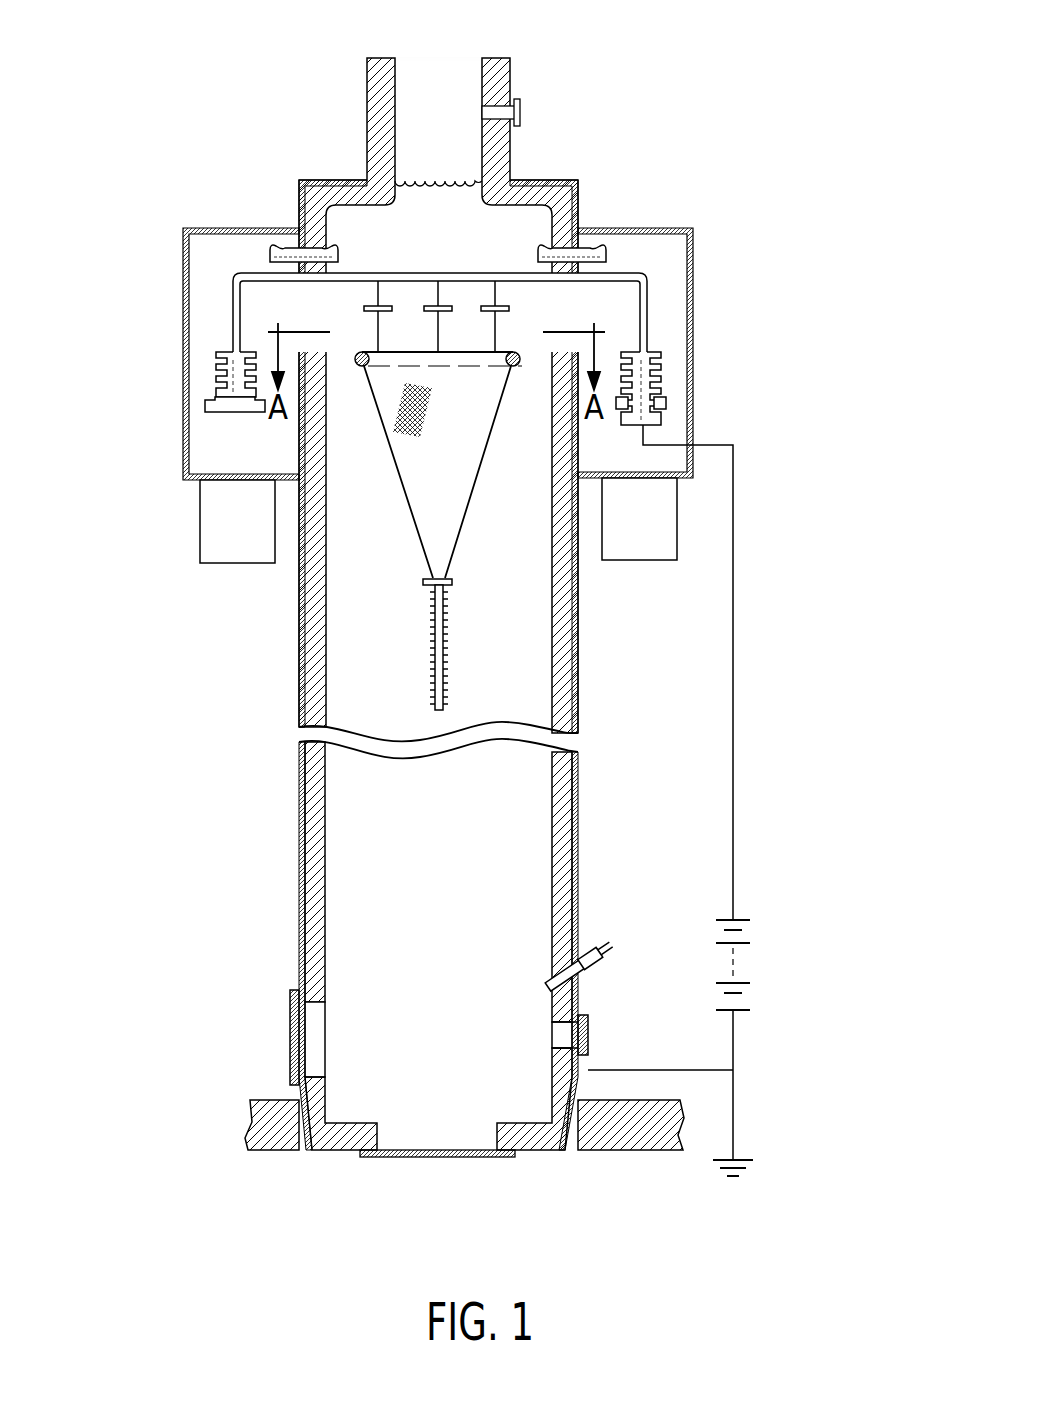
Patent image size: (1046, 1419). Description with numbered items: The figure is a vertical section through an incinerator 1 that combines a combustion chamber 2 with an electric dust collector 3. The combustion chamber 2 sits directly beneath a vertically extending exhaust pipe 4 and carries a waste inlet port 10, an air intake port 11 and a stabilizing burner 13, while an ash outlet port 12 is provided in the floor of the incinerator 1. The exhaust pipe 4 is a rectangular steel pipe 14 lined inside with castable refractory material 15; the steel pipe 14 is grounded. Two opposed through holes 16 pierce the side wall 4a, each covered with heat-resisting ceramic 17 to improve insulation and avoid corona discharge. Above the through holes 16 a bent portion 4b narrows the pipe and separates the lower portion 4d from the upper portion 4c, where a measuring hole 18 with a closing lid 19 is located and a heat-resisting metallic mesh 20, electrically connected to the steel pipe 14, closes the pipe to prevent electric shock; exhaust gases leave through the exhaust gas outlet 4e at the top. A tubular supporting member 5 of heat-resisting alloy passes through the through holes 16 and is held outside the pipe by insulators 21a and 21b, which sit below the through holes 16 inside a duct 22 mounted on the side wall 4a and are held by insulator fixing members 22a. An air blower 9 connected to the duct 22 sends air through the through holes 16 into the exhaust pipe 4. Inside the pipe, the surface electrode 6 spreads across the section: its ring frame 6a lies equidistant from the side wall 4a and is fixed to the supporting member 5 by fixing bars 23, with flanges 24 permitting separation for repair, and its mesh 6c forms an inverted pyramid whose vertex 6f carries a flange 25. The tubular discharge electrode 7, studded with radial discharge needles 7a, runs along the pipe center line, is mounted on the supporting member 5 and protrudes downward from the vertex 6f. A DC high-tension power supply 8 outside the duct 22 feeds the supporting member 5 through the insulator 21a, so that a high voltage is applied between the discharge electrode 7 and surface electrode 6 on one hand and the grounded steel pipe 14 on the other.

The incinerator 1 is at (585, 167).
The combustion chamber 2 is at (305, 810).
The electric dust collector 3 is at (695, 465).
The exhaust pipe 4 is at (522, 575).
The side wall 4a is at (312, 860).
The bent portion 4b is at (325, 178).
The upper portion 4c is at (367, 88).
The lower portion 4d is at (300, 828).
The exhaust gas outlet 4e is at (458, 57).
The supporting member 5 is at (482, 272).
The surface electrode 6 is at (385, 501).
The ring frame 6a is at (517, 367).
The mesh 6c is at (400, 432).
The vertex 6f is at (428, 584).
The discharge electrode 7 is at (453, 658).
The discharge needles 7a is at (448, 660).
The DC high-tension power supply 8 is at (745, 920).
The air blower 9 is at (200, 530).
The waste inlet port 10 is at (299, 1030).
The air intake port 11 is at (565, 1030).
The ash outlet port 12 is at (472, 1140).
The stabilizing burner 13 is at (600, 942).
The steel pipe 14 is at (578, 725).
The castable refractory material 15 is at (578, 700).
The through holes 16 is at (270, 268).
The heat-resisting ceramic 17 is at (235, 288).
The measuring hole 18 is at (505, 113).
The closing lid 19 is at (522, 102).
The heat-resisting metallic mesh 20 is at (403, 175).
The insulator 21a is at (665, 360).
The insulator 21b is at (212, 375).
The duct 22 is at (183, 245).
The insulator fixing members 22a is at (207, 405).
The fixing bars 23 is at (363, 290).
The flanges 24 is at (365, 312).
The flange 25 is at (453, 585).